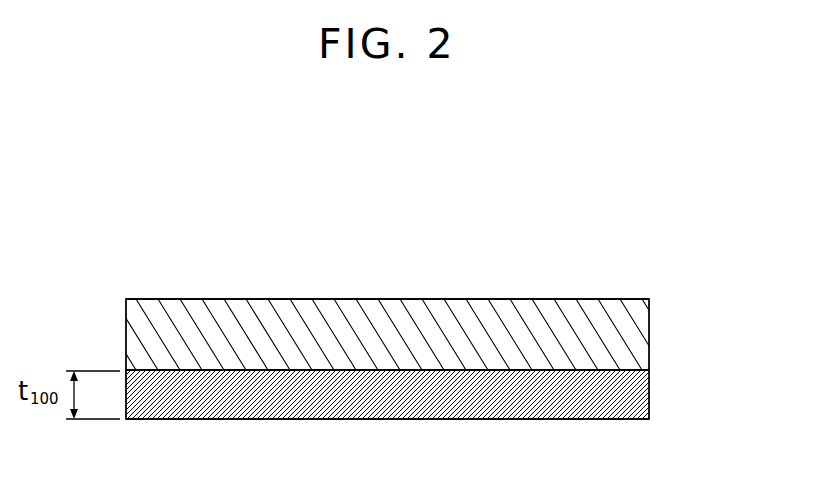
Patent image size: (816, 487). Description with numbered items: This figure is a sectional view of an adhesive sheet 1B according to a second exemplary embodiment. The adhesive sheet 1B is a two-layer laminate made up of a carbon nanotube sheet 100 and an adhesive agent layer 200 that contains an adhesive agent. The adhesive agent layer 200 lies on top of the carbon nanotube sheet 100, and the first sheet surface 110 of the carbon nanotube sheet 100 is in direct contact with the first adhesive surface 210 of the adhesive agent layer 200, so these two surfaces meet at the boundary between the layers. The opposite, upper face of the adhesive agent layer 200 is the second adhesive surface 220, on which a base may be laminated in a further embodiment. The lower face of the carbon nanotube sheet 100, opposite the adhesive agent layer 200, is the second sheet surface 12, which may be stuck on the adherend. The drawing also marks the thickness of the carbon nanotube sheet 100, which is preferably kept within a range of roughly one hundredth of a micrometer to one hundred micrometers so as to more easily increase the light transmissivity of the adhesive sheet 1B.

The adhesive sheet 1B is at (559, 206).
The adhesive agent layer 200 is at (641, 320).
The second adhesive surface 220 is at (620, 298).
The first adhesive surface 210 is at (621, 371).
The first sheet surface 110 is at (611, 369).
The carbon nanotube sheet 100 is at (645, 406).
The second sheet surface 12 is at (605, 420).